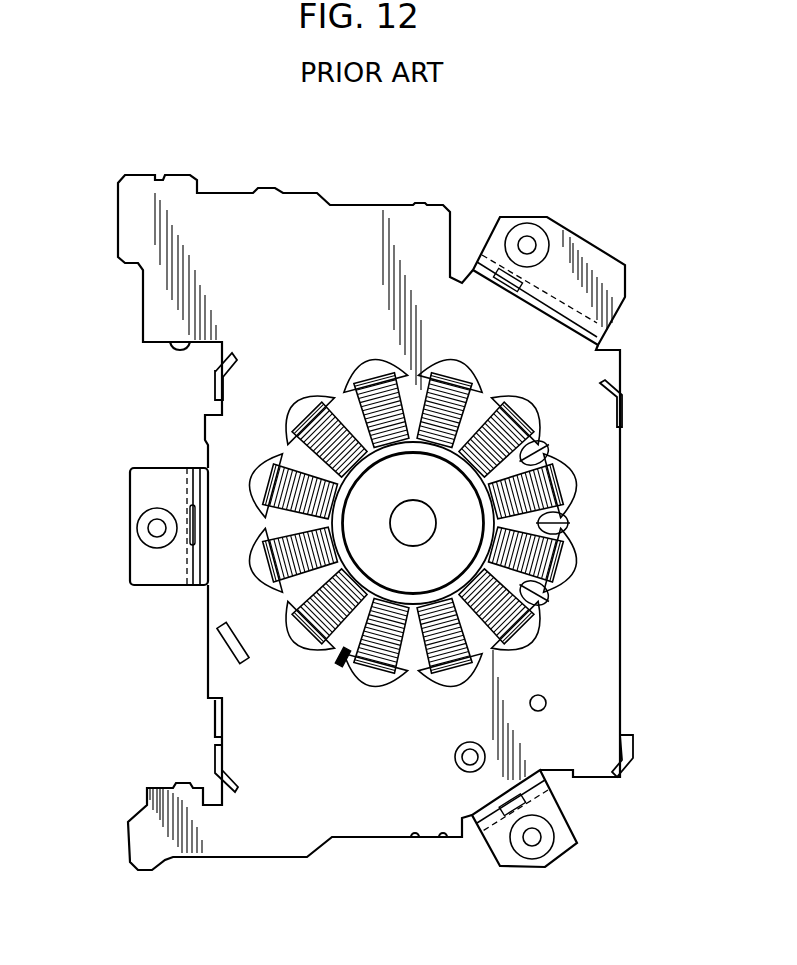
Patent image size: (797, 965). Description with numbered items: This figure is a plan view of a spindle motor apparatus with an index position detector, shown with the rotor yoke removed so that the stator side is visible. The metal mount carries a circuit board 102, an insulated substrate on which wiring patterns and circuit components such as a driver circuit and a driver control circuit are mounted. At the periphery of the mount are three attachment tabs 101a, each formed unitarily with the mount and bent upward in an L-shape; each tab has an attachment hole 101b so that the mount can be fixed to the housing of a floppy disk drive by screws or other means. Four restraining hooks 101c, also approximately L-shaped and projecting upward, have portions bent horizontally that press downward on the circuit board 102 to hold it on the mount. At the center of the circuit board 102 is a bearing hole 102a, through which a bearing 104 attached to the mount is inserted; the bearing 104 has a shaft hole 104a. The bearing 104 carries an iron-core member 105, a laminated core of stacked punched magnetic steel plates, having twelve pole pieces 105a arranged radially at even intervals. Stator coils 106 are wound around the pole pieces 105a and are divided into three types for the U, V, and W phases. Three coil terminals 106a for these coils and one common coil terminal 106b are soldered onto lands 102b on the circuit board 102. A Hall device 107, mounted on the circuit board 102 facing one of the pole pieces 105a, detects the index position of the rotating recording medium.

The circuit board 102 is at (218, 232).
The bearing hole 102a is at (373, 495).
The lands 102b is at (565, 527).
The attachment tabs 101a is at (608, 270).
The attachment holes 101b is at (527, 243).
The restraining hooks 101c is at (215, 388).
The bearing 104 is at (460, 563).
The shaft hole 104a is at (428, 532).
The iron-core member 105 is at (423, 607).
The pole pieces 105a is at (493, 432).
The stator coils 106 is at (377, 397).
The coil terminals 106a is at (533, 404).
The common coil terminal 106b is at (340, 660).
The Hall device 107 is at (228, 650).